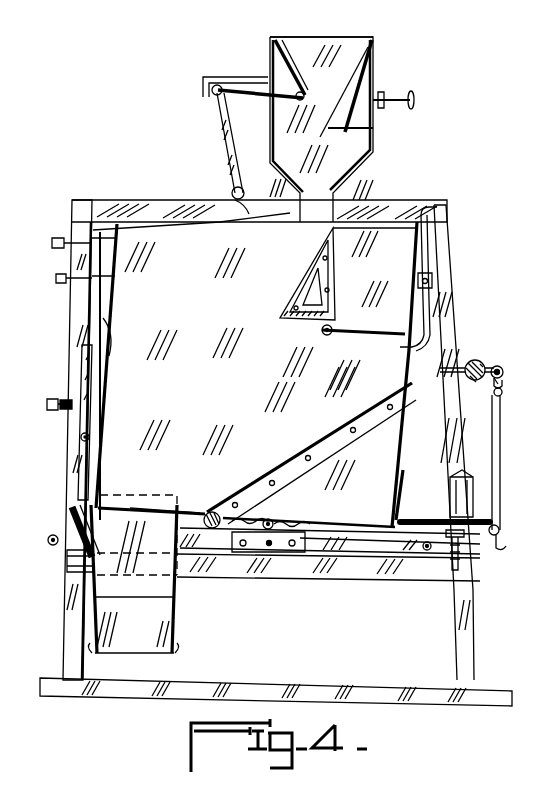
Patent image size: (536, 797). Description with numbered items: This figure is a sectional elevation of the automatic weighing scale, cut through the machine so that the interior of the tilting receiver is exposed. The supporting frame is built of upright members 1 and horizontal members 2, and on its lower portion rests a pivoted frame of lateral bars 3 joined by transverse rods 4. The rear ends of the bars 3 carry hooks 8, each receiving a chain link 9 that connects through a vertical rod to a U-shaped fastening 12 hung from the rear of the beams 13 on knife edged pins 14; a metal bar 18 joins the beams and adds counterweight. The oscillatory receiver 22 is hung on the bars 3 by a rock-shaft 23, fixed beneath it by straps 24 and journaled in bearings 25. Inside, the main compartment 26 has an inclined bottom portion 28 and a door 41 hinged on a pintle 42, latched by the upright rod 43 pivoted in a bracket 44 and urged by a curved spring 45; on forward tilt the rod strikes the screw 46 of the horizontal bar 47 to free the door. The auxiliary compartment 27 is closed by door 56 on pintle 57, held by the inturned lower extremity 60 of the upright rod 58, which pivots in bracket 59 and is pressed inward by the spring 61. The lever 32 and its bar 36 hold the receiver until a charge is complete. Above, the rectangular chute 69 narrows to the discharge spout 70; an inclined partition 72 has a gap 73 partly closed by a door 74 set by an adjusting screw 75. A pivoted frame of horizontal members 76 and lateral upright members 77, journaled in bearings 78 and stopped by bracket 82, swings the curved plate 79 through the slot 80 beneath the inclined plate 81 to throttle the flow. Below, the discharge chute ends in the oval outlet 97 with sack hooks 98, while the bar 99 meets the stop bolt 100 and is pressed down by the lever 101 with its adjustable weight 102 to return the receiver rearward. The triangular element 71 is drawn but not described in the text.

The upright members 1 is at (70, 631).
The horizontal members 2 is at (132, 212).
The lateral bars 3 is at (365, 546).
The transverse rods 4 is at (50, 542).
The hooks 8 is at (506, 548).
The chain link 9 is at (500, 530).
The U-shaped fastening 12 is at (503, 390).
The beams 13 is at (504, 372).
The knife edged pins 14 is at (494, 384).
The metal bar 18 is at (486, 354).
The oscillatory receiver 22 is at (108, 378).
The rock-shaft 23 is at (274, 520).
The straps 24 is at (288, 521).
The bearings 25 is at (282, 550).
The main compartment 26 is at (256, 398).
The auxiliary compartment 27 is at (375, 267).
The inclined bottom portion 28 is at (300, 447).
The lever 32 is at (100, 232).
The bar 36 is at (108, 290).
The door 41 is at (135, 510).
The pintle 42 is at (213, 512).
The upright rod 43 is at (85, 470).
The bracket 44 is at (96, 437).
The curved spring 45 is at (112, 334).
The screw 46 is at (50, 400).
The horizontal bar 47 is at (62, 410).
The door 56 is at (363, 345).
The pintle 57 is at (314, 343).
The upright rod 58 is at (431, 254).
The bracket 59 is at (434, 282).
The inturned lower extremity 60 is at (400, 347).
The spring 61 is at (432, 333).
The rectangular chute 69 is at (346, 46).
The discharge spout 70 is at (502, 430).
The triangular plate 71 is at (312, 272).
The inclined partition 72 is at (344, 86).
The gap 73 is at (330, 104).
The door 74 is at (373, 127).
The adjusting screw 75 is at (394, 94).
The horizontal members 76 is at (213, 93).
The lateral upright members 77 is at (222, 128).
The bearings 78 is at (243, 216).
The curved plate 79 is at (260, 103).
The slot 80 is at (296, 98).
The inclined plate 81 is at (298, 80).
The bracket 82 is at (232, 76).
The outlet 97 is at (134, 579).
The hooks 98 is at (178, 655).
The bar 99 is at (411, 520).
The bolt 100 is at (466, 552).
The lever 101 is at (480, 512).
The adjustable weight 102 is at (470, 471).